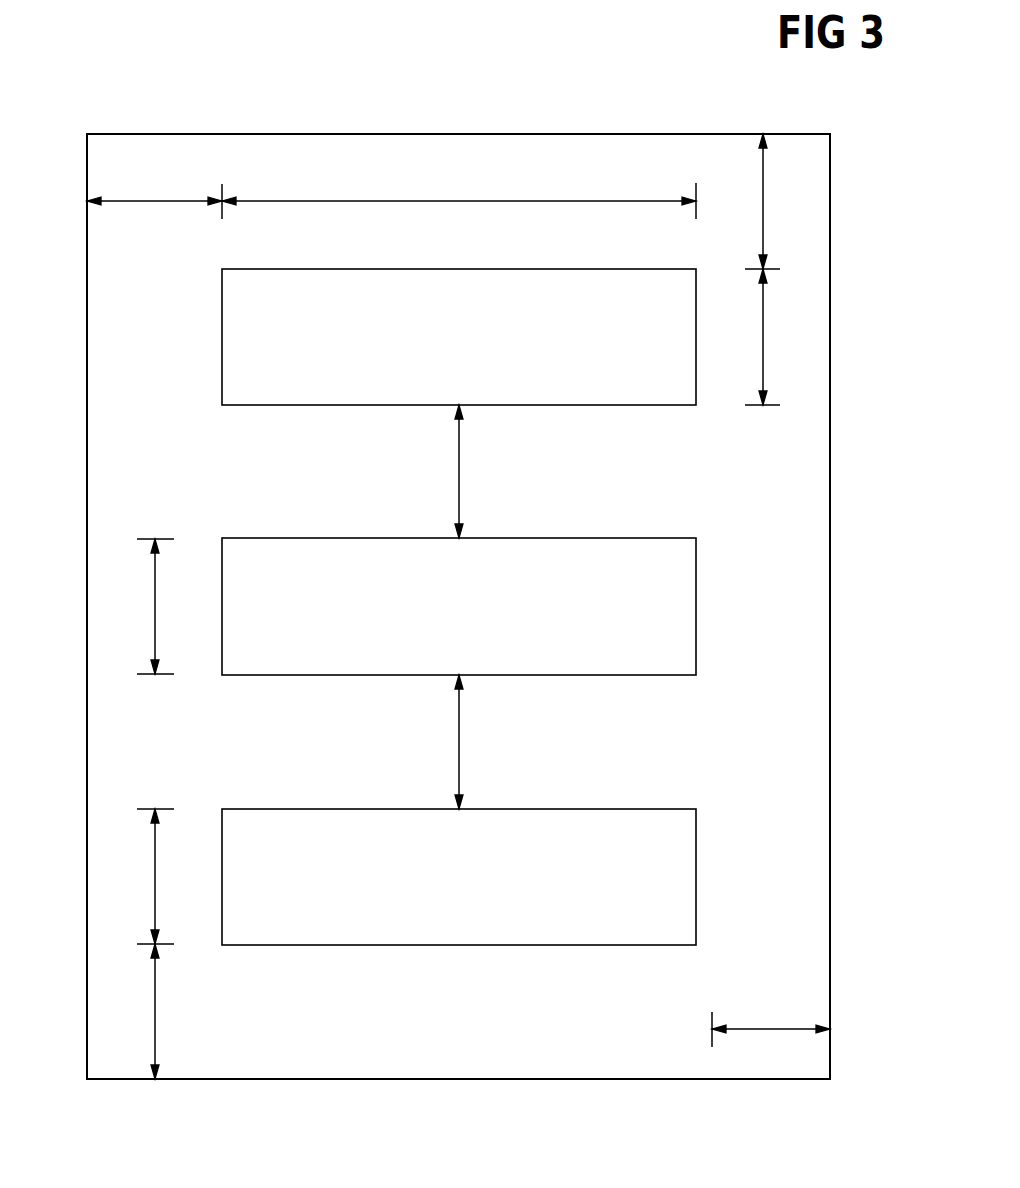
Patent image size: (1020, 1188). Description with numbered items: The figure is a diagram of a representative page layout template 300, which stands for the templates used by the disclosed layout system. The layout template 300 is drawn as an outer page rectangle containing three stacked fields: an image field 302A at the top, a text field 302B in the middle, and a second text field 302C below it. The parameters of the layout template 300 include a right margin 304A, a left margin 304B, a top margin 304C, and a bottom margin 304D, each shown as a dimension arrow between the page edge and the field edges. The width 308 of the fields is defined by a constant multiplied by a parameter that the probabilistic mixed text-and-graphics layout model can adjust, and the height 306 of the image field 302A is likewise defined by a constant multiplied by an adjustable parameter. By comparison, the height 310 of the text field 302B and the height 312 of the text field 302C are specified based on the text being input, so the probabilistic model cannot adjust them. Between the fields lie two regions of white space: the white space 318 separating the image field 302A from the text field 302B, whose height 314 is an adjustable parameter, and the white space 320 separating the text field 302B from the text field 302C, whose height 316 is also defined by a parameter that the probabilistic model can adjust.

The layout template 300 is at (288, 1079).
The image field 302A is at (433, 360).
The text field 302B is at (433, 631).
The text field 302C is at (433, 901).
The right margin 304A is at (152, 199).
The left margin 304B is at (775, 1028).
The top margin 304C is at (763, 201).
The bottom margin 304D is at (155, 1011).
The height 306 is at (763, 336).
The width 308 is at (361, 198).
The height 310 is at (155, 619).
The height 312 is at (155, 888).
The height 314 is at (459, 470).
The height 316 is at (459, 741).
The white space 318 is at (643, 480).
The white space 320 is at (645, 751).